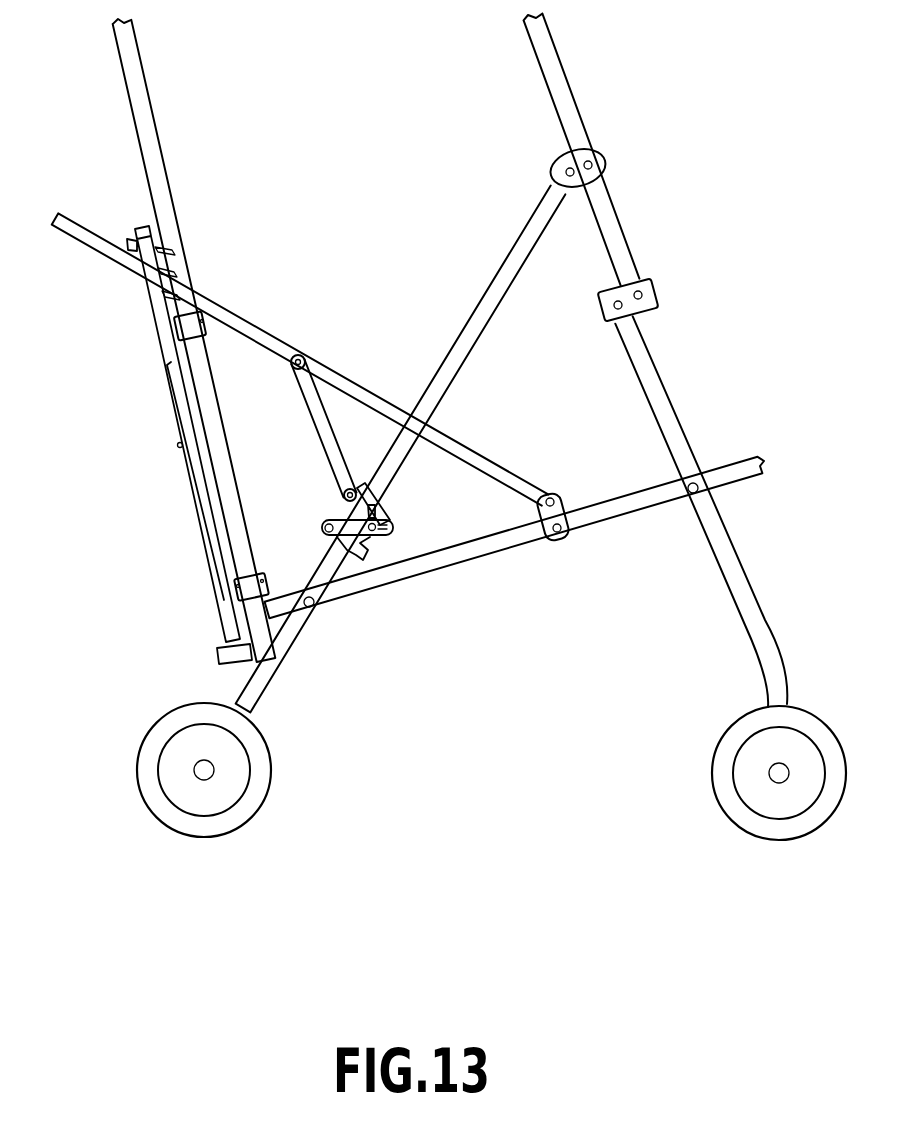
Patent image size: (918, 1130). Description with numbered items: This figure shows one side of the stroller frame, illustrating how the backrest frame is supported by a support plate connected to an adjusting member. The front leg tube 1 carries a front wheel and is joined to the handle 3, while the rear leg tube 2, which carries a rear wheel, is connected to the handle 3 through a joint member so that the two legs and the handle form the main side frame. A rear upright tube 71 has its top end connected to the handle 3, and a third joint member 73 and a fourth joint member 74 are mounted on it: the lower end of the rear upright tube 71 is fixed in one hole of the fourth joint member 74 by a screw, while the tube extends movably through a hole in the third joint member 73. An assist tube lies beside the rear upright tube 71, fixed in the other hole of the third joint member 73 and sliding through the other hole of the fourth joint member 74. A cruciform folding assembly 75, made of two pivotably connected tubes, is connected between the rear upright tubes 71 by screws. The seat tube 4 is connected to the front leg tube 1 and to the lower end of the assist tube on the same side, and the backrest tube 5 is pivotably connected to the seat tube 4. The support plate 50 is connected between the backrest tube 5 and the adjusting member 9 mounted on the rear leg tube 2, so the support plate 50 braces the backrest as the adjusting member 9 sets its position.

The front leg tube 1 is at (745, 588).
The rear leg tube 2 is at (253, 693).
The handle 3 is at (610, 213).
The seat tube 4 is at (492, 555).
The backrest tube 5 is at (267, 338).
The adjusting member 9 is at (390, 490).
The support plate 50 is at (327, 445).
The rear upright tube 71 is at (152, 121).
The third joint member 73 is at (187, 328).
The fourth joint member 74 is at (227, 604).
The cruciform folding assembly 75 is at (163, 342).